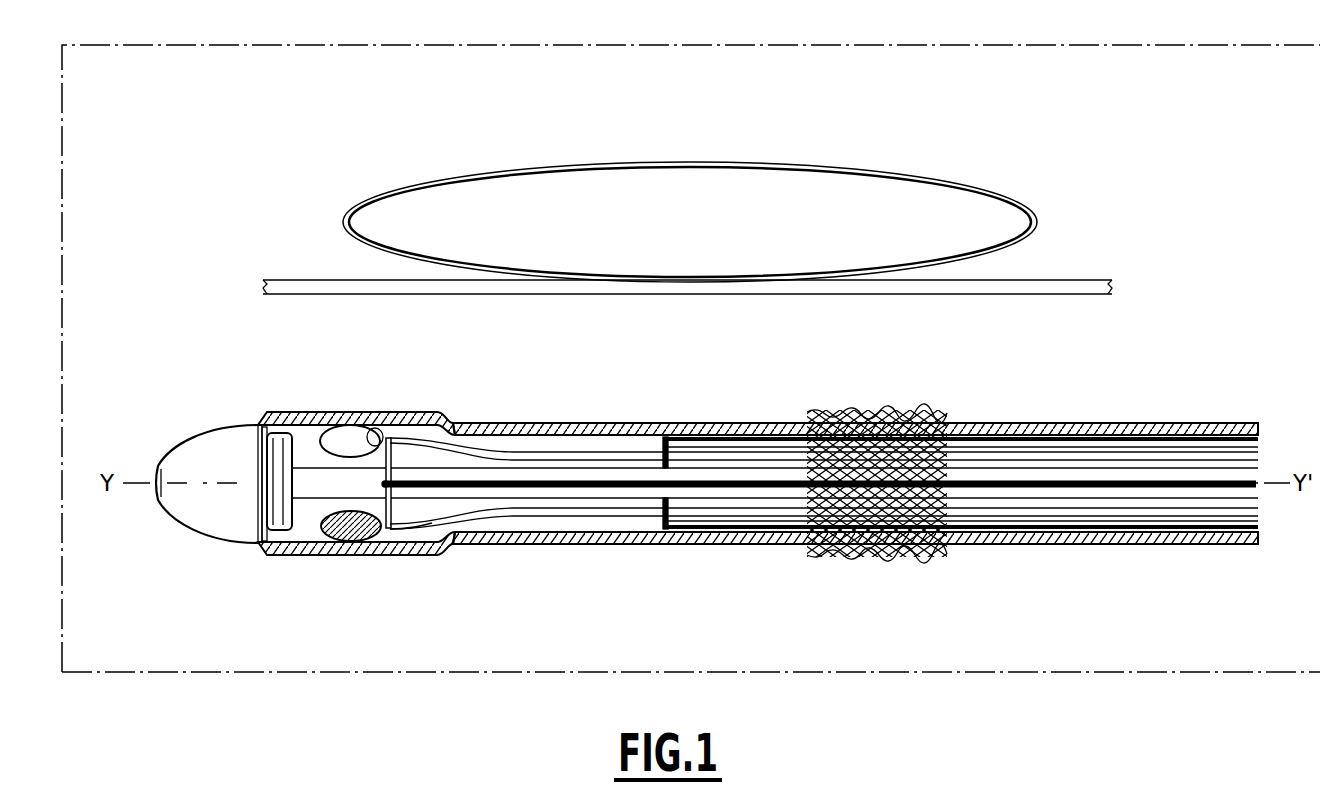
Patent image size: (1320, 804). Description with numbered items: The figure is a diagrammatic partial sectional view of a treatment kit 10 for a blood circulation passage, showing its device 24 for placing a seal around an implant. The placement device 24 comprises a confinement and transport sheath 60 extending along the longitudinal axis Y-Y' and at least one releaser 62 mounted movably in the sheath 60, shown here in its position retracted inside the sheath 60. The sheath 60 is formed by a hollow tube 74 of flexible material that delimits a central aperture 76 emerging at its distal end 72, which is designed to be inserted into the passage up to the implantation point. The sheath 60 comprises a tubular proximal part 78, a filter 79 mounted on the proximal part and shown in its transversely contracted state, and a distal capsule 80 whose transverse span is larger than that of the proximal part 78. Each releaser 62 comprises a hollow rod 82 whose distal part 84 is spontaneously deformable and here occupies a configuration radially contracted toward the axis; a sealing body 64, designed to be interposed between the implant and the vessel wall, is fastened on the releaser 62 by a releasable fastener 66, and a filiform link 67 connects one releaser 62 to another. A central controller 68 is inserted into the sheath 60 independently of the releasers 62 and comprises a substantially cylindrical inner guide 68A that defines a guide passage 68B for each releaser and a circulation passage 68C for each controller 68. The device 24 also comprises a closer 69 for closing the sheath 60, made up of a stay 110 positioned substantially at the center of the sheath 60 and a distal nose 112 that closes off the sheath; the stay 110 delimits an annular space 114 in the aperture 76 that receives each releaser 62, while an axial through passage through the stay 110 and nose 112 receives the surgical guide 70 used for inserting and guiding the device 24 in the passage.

The treatment kit 10 is at (1200, 684).
The placement device 24 is at (523, 392).
The confinement and transport sheath 60 is at (392, 398).
The releaser 62 is at (478, 426).
The sealing body 64 is at (340, 425).
The fastener 66 is at (403, 412).
The filiform link 67 is at (420, 530).
The central controller 68 is at (608, 478).
The inner guide 68A is at (674, 504).
The guide passage 68B is at (730, 544).
The circulation passage 68C is at (661, 457).
The closer 69 is at (180, 540).
The surgical guide 70 is at (1082, 287).
The distal end 72 is at (185, 427).
The hollow tube 74 is at (1055, 423).
The central aperture 76 is at (984, 518).
The tubular proximal part 78 is at (648, 543).
The filter 79 is at (833, 412).
The distal capsule 80 is at (305, 554).
The rod 82 is at (766, 452).
The distal part 84 is at (369, 430).
The stay 110 is at (722, 478).
The distal nose 112 is at (219, 518).
The annular space 114 is at (531, 518).